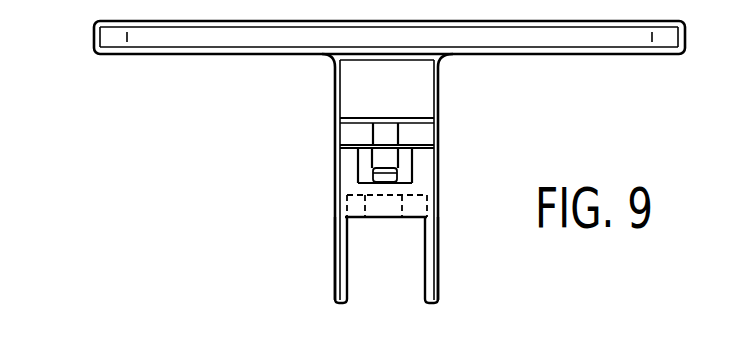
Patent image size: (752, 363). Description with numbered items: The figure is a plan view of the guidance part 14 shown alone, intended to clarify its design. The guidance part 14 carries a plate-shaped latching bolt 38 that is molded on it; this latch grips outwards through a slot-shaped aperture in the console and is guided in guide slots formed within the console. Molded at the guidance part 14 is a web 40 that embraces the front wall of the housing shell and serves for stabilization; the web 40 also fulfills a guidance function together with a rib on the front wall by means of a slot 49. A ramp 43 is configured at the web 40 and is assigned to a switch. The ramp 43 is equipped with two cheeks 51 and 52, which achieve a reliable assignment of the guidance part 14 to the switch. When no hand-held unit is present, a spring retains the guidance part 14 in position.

The guidance part 14 is at (150, 188).
The latching bolt 38 is at (177, 37).
The web 40 is at (343, 135).
The ramp 43 is at (417, 201).
The slot 49 is at (395, 132).
The cheek 51 is at (337, 250).
The cheek 52 is at (433, 257).